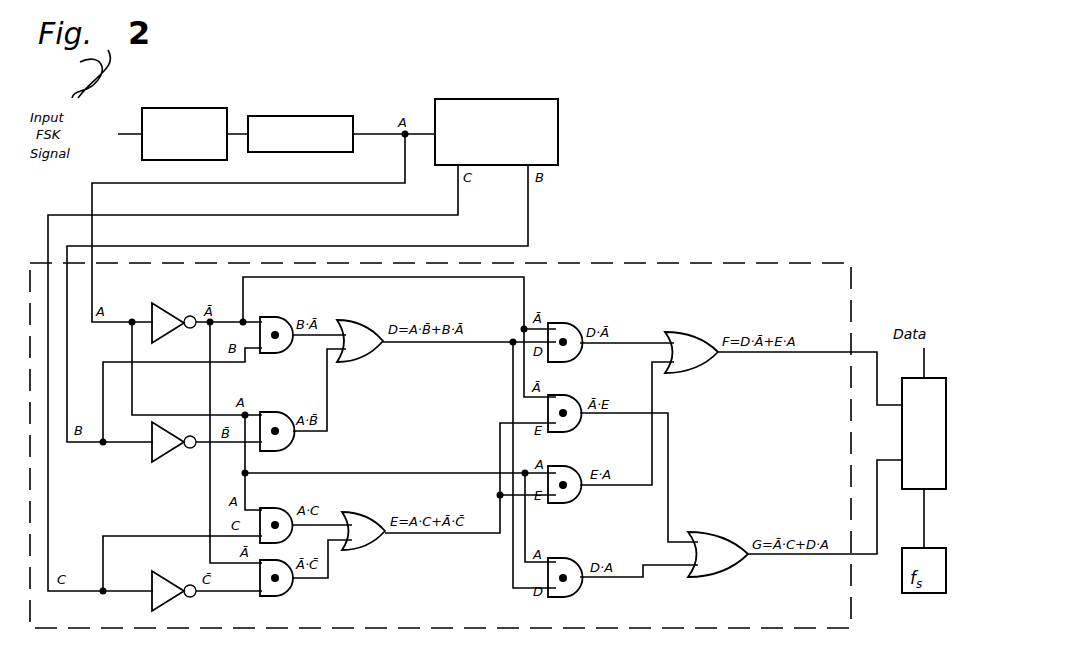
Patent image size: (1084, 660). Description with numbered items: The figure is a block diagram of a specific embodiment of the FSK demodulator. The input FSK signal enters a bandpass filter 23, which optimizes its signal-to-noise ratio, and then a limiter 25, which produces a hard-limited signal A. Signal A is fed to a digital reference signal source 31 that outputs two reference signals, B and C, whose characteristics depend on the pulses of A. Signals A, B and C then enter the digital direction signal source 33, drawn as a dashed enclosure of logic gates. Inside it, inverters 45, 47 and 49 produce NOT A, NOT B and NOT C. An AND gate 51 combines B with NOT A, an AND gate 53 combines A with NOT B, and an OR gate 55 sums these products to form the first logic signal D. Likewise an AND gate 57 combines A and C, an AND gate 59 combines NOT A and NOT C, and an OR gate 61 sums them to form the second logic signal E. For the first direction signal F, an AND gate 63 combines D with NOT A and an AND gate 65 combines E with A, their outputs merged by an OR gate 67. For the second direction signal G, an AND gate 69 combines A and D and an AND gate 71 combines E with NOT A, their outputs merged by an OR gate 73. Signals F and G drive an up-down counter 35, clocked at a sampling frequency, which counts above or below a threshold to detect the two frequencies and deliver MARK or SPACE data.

The bandpass filter 23 is at (212, 101).
The limiter 25 is at (319, 116).
The digital reference signal source 31 is at (478, 99).
The digital direction signal source 33 is at (707, 263).
The up-down counter 35 is at (904, 492).
The inverter 45 is at (158, 302).
The inverter 47 is at (158, 463).
The inverter 49 is at (157, 607).
The AND gate 51 is at (271, 317).
The AND gate 53 is at (277, 412).
The OR gate 55 is at (348, 322).
The AND gate 57 is at (272, 508).
The AND gate 59 is at (274, 596).
The OR gate 61 is at (362, 549).
The AND gate 63 is at (566, 323).
The AND gate 65 is at (561, 470).
The OR gate 67 is at (688, 334).
The AND gate 69 is at (562, 560).
The AND gate 71 is at (566, 395).
The OR gate 73 is at (709, 533).